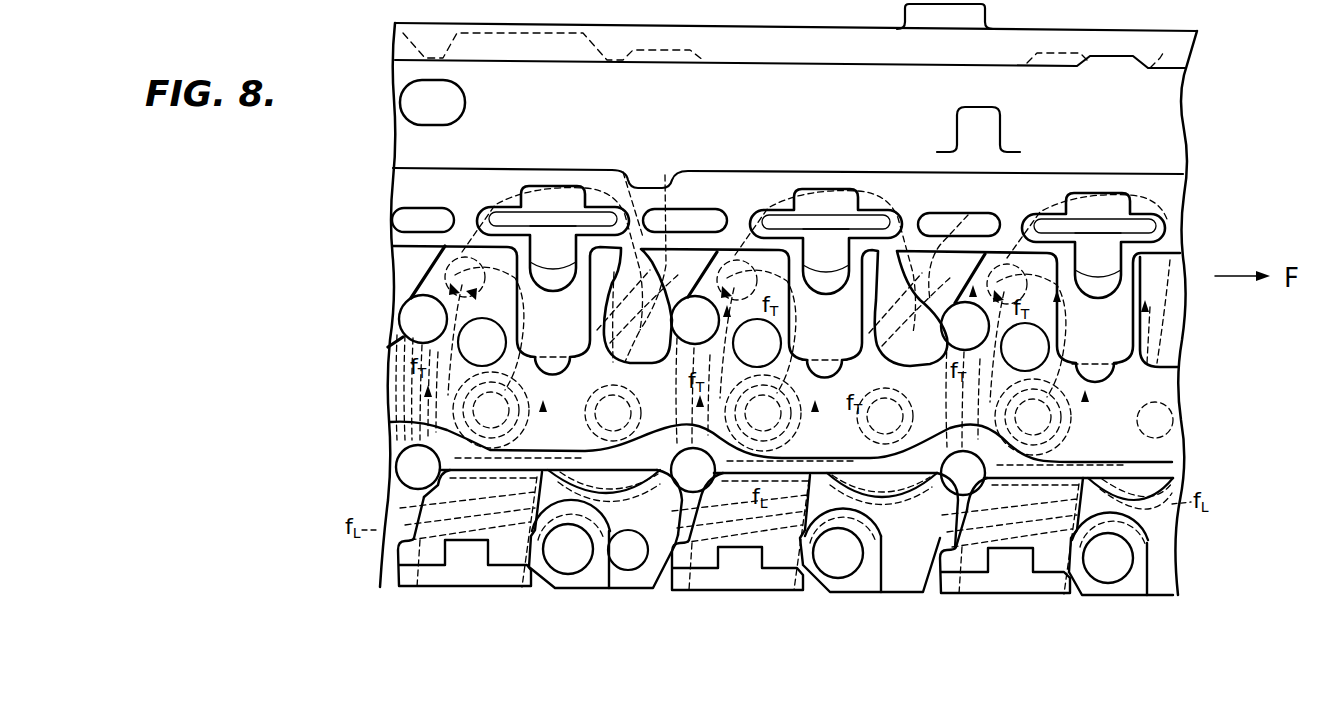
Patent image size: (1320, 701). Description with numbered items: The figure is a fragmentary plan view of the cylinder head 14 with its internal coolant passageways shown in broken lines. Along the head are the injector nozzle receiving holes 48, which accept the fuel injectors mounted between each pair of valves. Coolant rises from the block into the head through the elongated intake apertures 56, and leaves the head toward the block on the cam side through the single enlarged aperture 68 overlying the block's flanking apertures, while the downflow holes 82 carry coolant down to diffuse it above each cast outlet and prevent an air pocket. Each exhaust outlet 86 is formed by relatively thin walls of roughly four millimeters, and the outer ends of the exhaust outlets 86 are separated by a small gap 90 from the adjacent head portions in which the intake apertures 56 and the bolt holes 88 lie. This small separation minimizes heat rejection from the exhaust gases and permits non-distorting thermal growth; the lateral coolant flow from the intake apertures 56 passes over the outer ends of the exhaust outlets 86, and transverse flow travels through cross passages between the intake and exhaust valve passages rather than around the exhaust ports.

The cylinder head 14 is at (1198, 128).
The injector nozzle receiving holes 48 is at (541, 256).
The enlarged aperture 68 is at (385, 262).
The bolt holes 88 is at (411, 331).
The downflow holes 82 is at (383, 497).
The exhaust outlets 86 is at (423, 587).
The intake apertures 56 is at (1210, 528).
The gap 90 is at (628, 550).